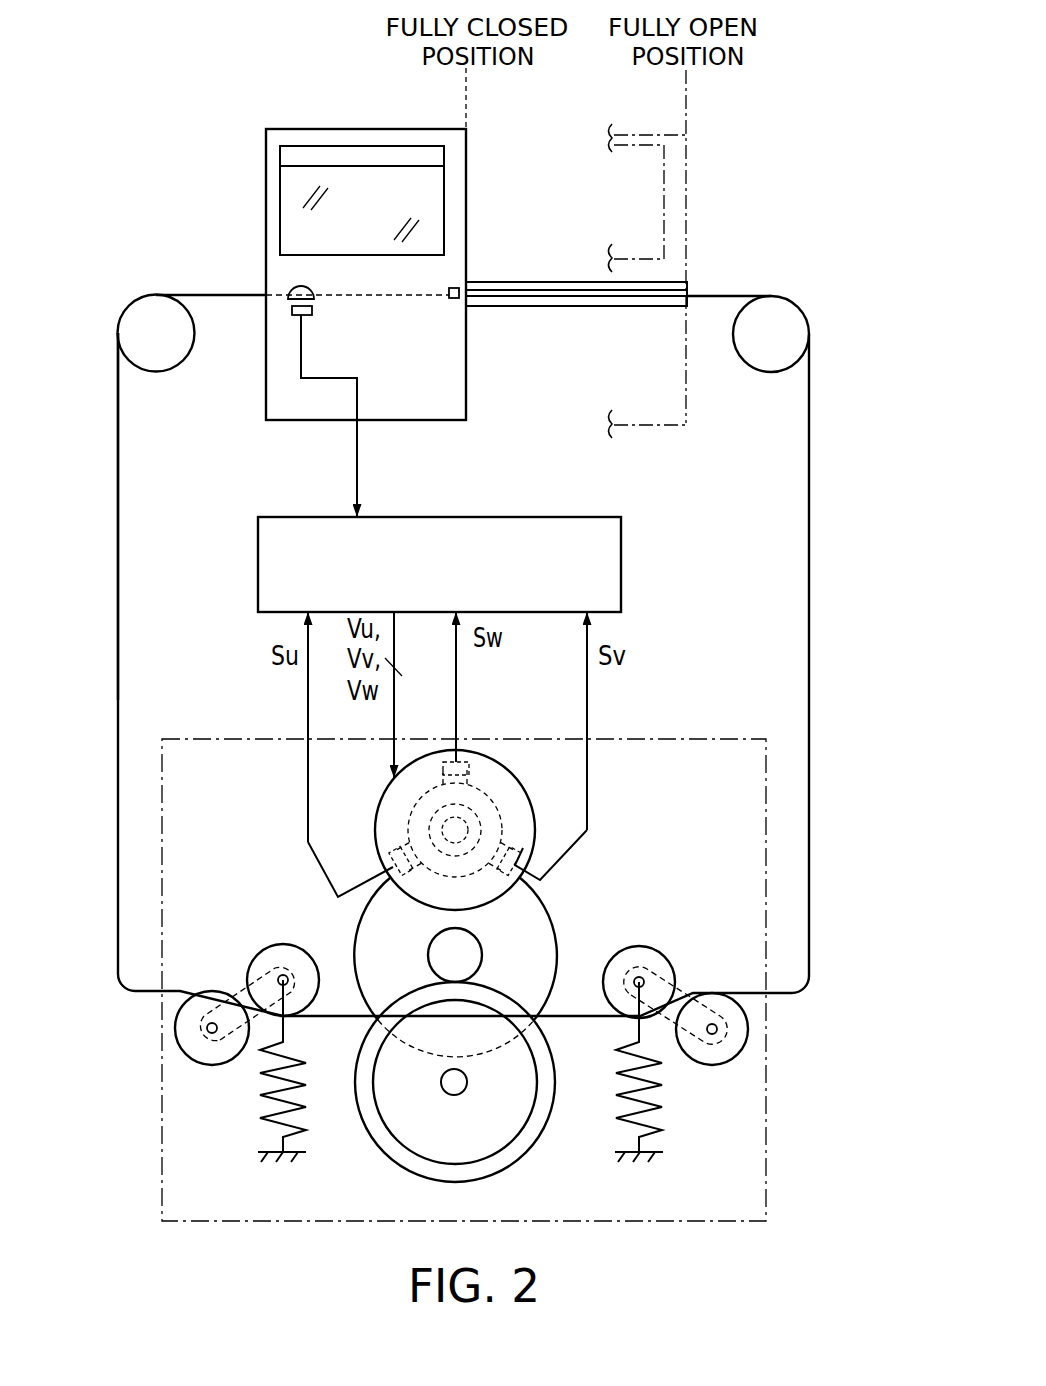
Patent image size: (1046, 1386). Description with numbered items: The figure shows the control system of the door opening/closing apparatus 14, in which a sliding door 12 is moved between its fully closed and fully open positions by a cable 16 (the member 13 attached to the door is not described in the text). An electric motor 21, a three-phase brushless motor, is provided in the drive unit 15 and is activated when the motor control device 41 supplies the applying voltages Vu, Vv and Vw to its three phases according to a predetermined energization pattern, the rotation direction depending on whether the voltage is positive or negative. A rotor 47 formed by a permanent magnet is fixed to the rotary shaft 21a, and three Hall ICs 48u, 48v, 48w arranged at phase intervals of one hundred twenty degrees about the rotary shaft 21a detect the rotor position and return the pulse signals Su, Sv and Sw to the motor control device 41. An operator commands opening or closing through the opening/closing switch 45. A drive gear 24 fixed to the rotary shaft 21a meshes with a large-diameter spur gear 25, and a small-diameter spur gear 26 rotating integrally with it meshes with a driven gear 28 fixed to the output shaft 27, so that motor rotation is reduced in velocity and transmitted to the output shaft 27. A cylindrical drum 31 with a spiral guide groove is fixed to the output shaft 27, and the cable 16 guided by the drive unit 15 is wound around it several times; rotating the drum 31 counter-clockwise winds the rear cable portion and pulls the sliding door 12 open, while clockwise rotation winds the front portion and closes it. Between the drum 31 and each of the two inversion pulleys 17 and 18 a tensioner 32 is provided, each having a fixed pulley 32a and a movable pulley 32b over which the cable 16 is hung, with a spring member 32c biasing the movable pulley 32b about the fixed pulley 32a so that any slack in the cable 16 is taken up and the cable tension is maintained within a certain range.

The sliding door 12 is at (360, 127).
The guide rail 13 is at (690, 283).
The door opening/closing apparatus 14 is at (831, 372).
The drive unit 15 is at (713, 737).
The cable 16 is at (117, 784).
The inversion pulley 17 is at (770, 370).
The inversion pulley 18 is at (153, 360).
The electric motor 21 is at (399, 893).
The rotary shaft 21a is at (440, 832).
The drive gear 24 is at (430, 822).
The large-diameter spur gear 25 is at (545, 903).
The small-diameter spur gear 26 is at (482, 950).
The output shaft 27 is at (463, 1092).
The driven gear 28 is at (527, 1155).
The cylindrical drum 31 is at (393, 1135).
The tensioner 32 is at (412, 1016).
The fixed pulley 32a is at (188, 1046).
The movable pulley 32b is at (282, 948).
The spring member 32c is at (268, 1123).
The motor control device 41 is at (626, 557).
The opening/closing switch 45 is at (292, 312).
The rotor 47 is at (395, 792).
The Hall IC 48u is at (392, 866).
The Hall IC 48v is at (517, 850).
The Hall IC 48w is at (440, 760).